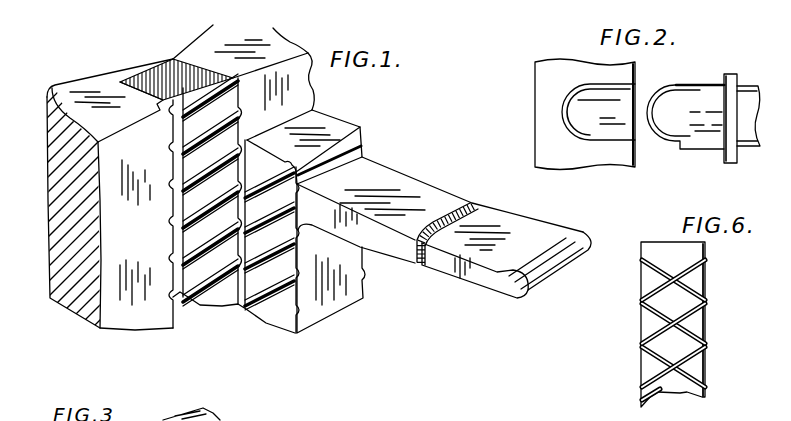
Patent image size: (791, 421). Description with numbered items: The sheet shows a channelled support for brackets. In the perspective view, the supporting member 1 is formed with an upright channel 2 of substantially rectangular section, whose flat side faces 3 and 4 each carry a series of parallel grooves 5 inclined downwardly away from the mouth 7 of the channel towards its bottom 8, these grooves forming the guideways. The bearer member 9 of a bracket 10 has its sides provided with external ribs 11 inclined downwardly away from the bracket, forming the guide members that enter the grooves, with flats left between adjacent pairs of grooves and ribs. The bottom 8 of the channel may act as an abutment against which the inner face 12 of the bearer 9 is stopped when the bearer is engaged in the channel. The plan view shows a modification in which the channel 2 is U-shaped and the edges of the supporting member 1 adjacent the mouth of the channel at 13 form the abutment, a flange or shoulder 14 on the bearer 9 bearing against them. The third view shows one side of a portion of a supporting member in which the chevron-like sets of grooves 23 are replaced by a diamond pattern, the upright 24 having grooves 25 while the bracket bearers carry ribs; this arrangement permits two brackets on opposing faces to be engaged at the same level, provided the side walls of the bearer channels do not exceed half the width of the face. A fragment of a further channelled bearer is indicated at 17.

In FIG. 1, the supporting member 1 is at (122, 318).
In FIG. 2, the supporting member 1 is at (613, 155).
In FIG. 1, the upright channel 2 is at (137, 76).
In FIG. 2, the upright channel 2 is at (573, 113).
In FIG. 1, the side face of channel 3 is at (160, 100).
In FIG. 1, the side face of channel 4 is at (194, 154).
In FIG. 1, the parallel grooves 5 is at (172, 182).
In FIG. 1, the mouth of channel 7 is at (207, 330).
In FIG. 1, the bottom of channel 8 is at (168, 87).
In FIG. 1, the bearer member 9 is at (337, 130).
In FIG. 1, the bracket 10 is at (397, 182).
In FIG. 1, the external ribs 11 is at (263, 250).
In FIG. 2, the external ribs 11 is at (683, 83).
In FIG. 1, the inner face of bearer 12 is at (310, 108).
In FIG. 2, the edges of supporting member adjacent channel mouth 13 is at (636, 152).
In FIG. 2, the flange or shoulder 14 is at (725, 80).
In FIG. 3, the wedge 17 is at (151, 420).
In FIG. 6, the grooves 23 is at (652, 280).
In FIG. 6, the upright 24 is at (672, 252).
In FIG. 6, the grooves 25 is at (652, 327).